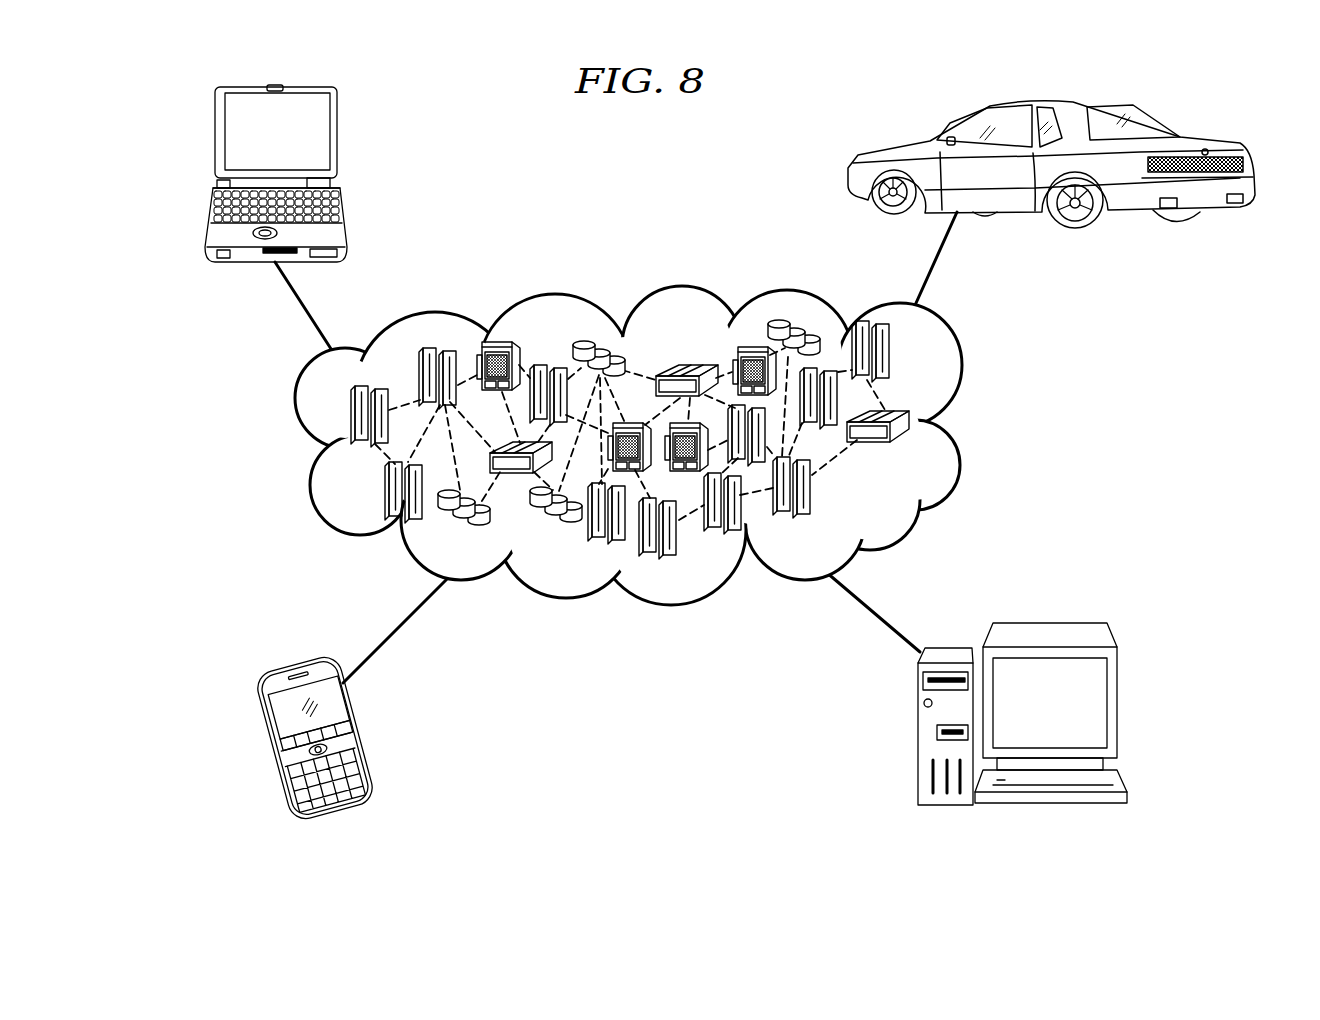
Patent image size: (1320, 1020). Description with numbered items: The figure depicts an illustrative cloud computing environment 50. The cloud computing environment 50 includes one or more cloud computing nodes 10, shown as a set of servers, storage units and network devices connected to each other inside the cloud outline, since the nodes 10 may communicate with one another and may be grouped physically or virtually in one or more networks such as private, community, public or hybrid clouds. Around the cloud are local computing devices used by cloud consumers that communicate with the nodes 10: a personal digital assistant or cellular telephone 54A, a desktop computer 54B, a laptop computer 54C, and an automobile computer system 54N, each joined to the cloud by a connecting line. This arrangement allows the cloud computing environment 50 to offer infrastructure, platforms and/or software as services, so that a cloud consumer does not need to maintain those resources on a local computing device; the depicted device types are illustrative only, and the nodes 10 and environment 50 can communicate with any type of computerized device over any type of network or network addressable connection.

The cloud computing node 10 is at (912, 450).
The cloud computing environment 50 is at (960, 376).
The personal digital assistant (PDA) or cellular telephone 54A is at (260, 728).
The desktop computer 54B is at (1050, 623).
The laptop computer 54C is at (217, 127).
The automobile computer system 54N is at (1215, 140).